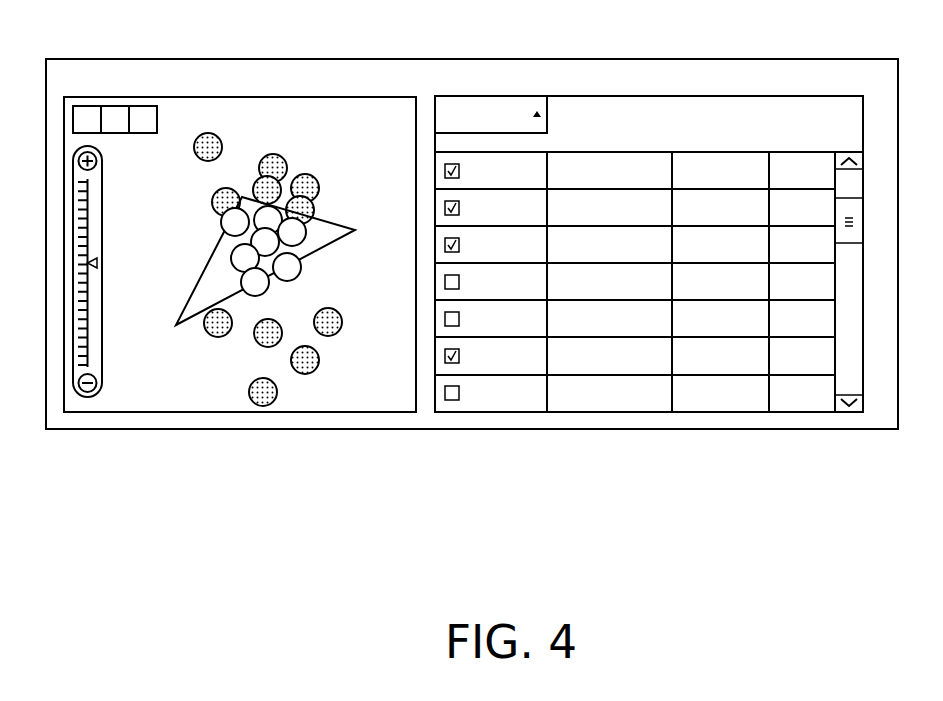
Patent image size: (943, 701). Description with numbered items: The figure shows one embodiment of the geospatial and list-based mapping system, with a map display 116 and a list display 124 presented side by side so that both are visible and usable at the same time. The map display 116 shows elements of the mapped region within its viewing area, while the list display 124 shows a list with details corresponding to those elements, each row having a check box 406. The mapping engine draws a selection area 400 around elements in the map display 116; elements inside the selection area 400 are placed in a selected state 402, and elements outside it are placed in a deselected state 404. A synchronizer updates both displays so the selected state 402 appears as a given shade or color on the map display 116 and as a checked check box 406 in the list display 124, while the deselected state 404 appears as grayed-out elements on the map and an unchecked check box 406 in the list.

The map display 116 is at (243, 97).
The list display 124 is at (632, 96).
The selection area 400 is at (355, 230).
The selected state 402 is at (225, 257).
The deselected state 404 is at (253, 403).
The check box 406 is at (447, 400).